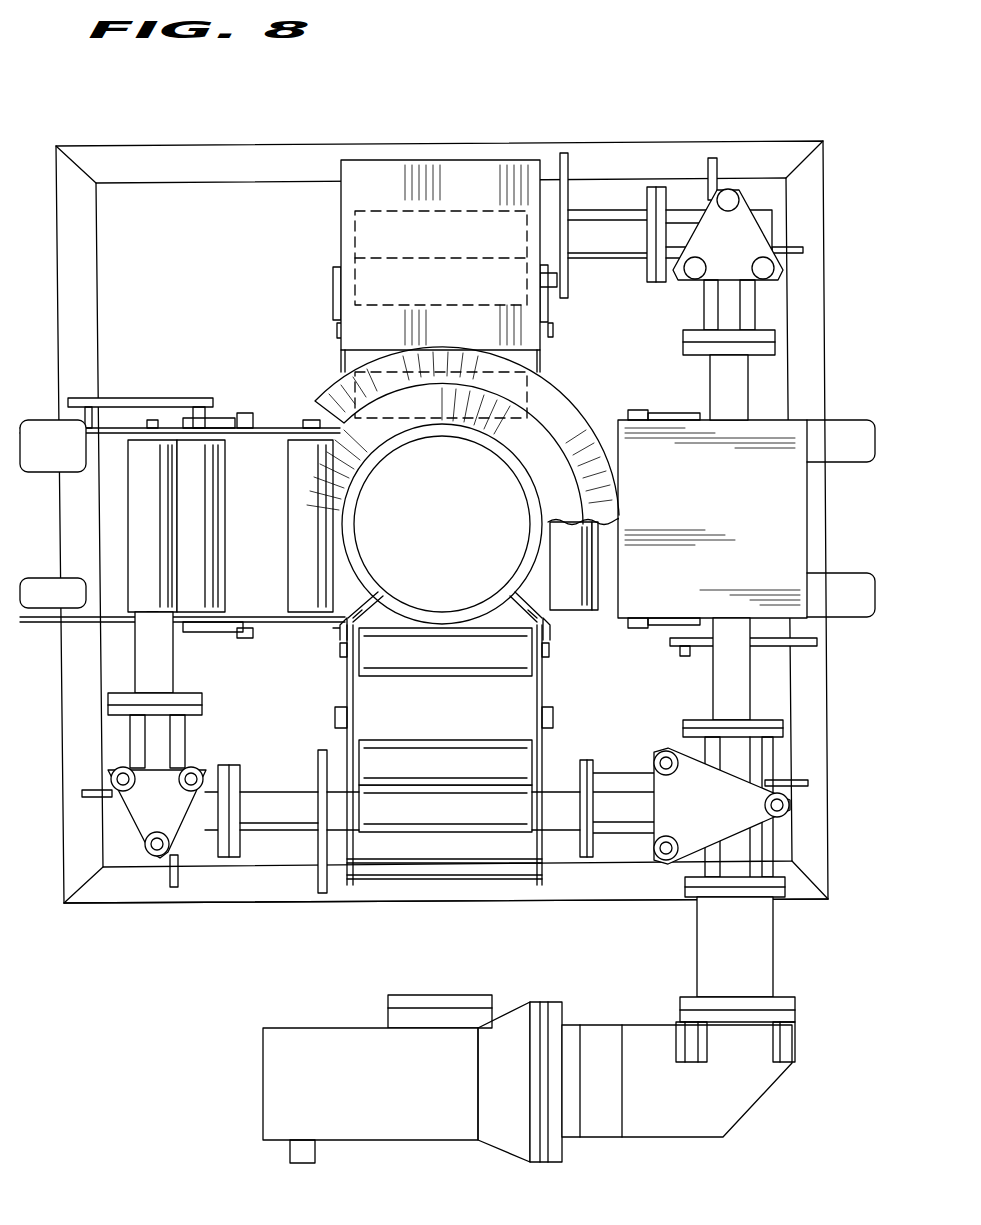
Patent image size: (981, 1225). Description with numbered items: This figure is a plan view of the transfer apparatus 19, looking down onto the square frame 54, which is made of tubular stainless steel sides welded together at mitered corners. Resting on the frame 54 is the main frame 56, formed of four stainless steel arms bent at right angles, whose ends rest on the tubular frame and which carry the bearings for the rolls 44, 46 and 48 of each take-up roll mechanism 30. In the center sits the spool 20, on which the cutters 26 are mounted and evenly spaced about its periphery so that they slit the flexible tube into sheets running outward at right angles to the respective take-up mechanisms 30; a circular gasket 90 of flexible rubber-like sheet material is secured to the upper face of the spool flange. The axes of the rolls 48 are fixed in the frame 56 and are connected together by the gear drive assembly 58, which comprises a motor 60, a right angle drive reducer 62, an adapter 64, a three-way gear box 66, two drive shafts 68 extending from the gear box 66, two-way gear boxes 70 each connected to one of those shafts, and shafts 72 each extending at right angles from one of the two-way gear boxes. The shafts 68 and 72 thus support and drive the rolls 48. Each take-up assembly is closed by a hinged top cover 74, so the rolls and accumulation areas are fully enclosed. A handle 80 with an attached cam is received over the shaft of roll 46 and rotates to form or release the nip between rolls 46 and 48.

The transfer apparatus 19 is at (210, 912).
The spool 20 is at (532, 512).
The cutters 26 is at (492, 610).
The take-up roll mechanism 30 is at (627, 383).
The roll 44 is at (288, 465).
The roll 46 is at (225, 522).
The roll 48 is at (128, 440).
The square frame 54 is at (96, 232).
The main frame 56 is at (325, 420).
The gear drive assembly 58 is at (668, 960).
The motor 60 is at (412, 1079).
The right angle drive reducer 62 is at (678, 1079).
The adapter 64 is at (737, 949).
The three-way gear box 66 is at (731, 806).
The drive shafts 68 is at (713, 670).
The two-way gear boxes 70 is at (432, 522).
The shafts 72 is at (590, 212).
The top cover 74 is at (608, 394).
The handle 80 is at (177, 398).
The circular gasket 90 is at (463, 435).